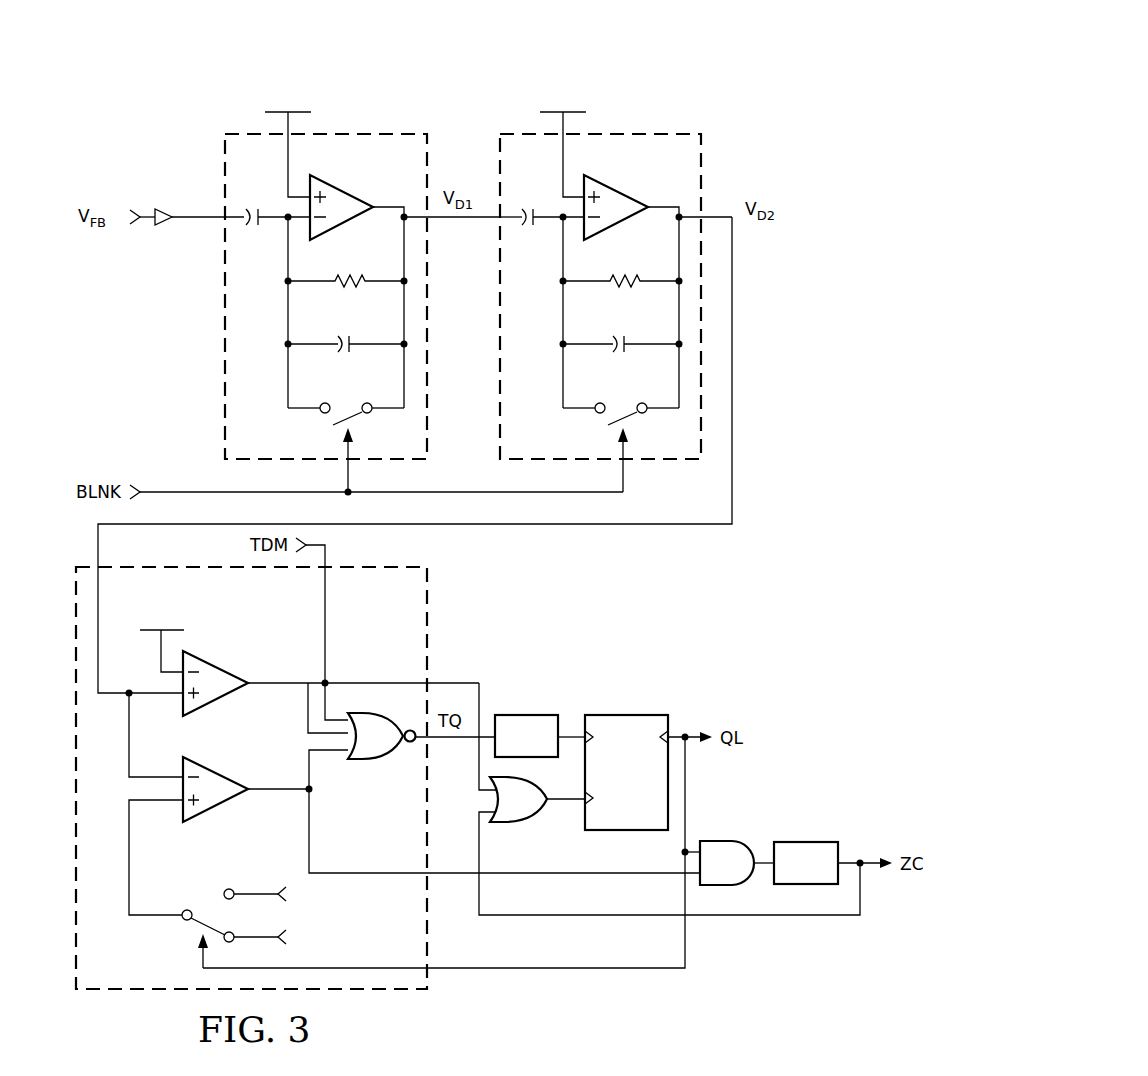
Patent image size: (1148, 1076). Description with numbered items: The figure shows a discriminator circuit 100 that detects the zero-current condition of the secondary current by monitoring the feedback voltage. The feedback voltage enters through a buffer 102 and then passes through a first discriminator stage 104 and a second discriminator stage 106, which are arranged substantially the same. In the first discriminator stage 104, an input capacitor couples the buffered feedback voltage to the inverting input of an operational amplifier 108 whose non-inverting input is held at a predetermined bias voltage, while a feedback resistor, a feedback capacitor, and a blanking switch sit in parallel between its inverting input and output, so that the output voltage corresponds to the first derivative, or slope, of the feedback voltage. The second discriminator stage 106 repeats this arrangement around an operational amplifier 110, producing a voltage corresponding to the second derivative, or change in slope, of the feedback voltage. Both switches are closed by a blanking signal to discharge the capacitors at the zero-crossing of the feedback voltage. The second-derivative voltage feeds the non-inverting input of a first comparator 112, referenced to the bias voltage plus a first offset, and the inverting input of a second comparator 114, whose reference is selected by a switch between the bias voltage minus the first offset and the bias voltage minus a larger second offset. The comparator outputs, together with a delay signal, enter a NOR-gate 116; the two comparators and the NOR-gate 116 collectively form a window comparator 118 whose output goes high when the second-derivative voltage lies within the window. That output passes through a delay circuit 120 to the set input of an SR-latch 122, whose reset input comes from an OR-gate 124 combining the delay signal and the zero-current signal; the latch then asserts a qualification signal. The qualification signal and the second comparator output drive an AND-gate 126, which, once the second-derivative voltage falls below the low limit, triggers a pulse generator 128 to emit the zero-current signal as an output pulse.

The discriminator circuit 100 is at (808, 70).
The buffer 102 is at (164, 211).
The first discriminator stage 104 is at (235, 134).
The second discriminator stage 106 is at (657, 134).
The operational amplifier 108 is at (335, 188).
The operational amplifier 110 is at (610, 188).
The first comparator 112 is at (208, 664).
The second comparator 114 is at (208, 772).
The NOR-gate 116 is at (368, 761).
The window comparator 118 is at (428, 603).
The delay circuit 120 is at (523, 713).
The SR-latch 122 is at (623, 713).
The OR-gate 124 is at (541, 818).
The AND-gate 126 is at (718, 841).
The pulse generator 128 is at (803, 842).